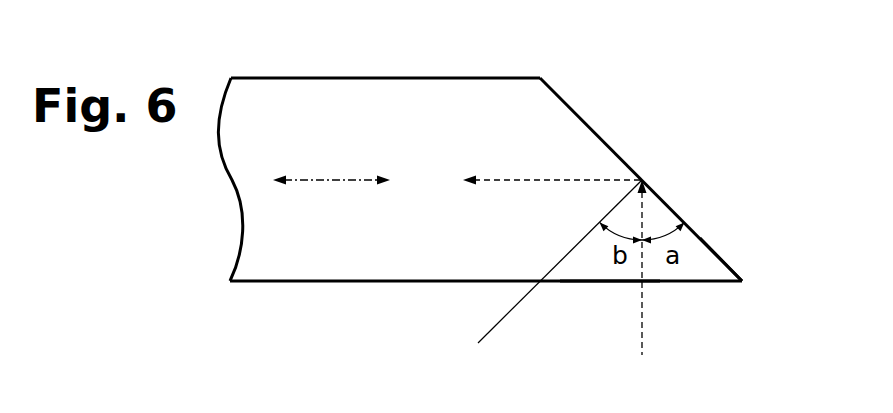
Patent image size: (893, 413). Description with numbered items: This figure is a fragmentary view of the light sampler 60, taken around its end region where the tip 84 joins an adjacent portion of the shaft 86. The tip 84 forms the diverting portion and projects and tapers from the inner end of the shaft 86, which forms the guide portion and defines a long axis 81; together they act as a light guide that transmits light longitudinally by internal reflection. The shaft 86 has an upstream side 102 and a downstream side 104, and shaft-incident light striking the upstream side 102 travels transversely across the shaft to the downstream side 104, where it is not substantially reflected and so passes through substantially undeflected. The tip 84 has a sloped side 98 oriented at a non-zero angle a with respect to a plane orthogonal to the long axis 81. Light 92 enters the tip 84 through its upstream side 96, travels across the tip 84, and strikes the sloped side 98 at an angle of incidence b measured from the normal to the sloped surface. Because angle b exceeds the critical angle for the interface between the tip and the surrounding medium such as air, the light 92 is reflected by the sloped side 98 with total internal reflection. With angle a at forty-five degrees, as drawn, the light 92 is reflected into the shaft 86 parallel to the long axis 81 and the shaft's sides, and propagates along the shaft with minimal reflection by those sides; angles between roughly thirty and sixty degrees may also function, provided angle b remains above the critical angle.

The light sampler 60 is at (503, 166).
The downstream side 104 is at (430, 76).
The upstream side 102 is at (428, 283).
The sloped side 98 is at (597, 130).
The tip 84 is at (714, 250).
The shaft 86 is at (310, 283).
The upstream side 96 is at (613, 283).
The light 92 is at (560, 178).
The long axis 81 is at (333, 178).